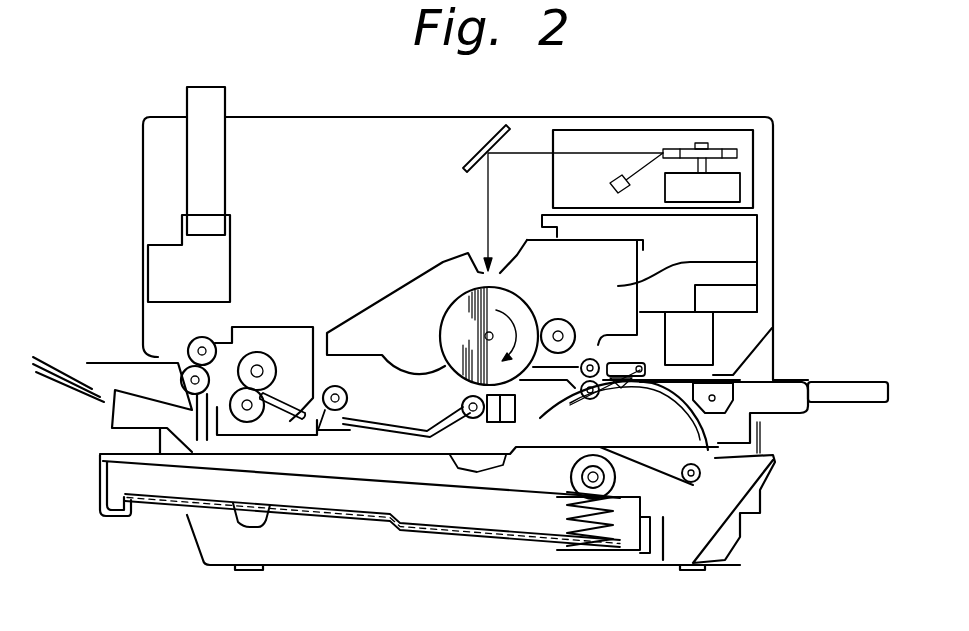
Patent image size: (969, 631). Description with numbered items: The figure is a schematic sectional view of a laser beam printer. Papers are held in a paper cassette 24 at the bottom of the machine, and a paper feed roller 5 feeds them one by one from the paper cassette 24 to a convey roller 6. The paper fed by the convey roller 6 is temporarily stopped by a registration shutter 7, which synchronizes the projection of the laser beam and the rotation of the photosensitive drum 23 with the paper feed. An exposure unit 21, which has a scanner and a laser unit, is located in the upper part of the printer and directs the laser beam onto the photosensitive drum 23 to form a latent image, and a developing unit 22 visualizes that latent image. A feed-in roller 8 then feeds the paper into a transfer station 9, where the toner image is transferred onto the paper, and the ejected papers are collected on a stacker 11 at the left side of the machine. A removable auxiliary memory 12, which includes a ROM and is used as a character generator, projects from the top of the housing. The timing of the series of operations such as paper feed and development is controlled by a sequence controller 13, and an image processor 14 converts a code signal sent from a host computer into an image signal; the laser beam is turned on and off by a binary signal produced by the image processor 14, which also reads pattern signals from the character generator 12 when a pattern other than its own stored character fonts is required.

The paper feed roller 5 is at (605, 368).
The convey roller 6 is at (703, 455).
The registration shutter 7 is at (617, 377).
The feed-in roller 8 is at (575, 395).
The transfer station 9 is at (493, 423).
The stacker 11 is at (93, 370).
The removable auxiliary memory 12 is at (213, 96).
The sequence controller 13 is at (743, 302).
The image processor 14 is at (163, 262).
The exposure unit 21 is at (772, 167).
The developing unit 22 is at (757, 262).
The photosensitive drum 23 is at (448, 297).
The paper cassette 24 is at (100, 468).